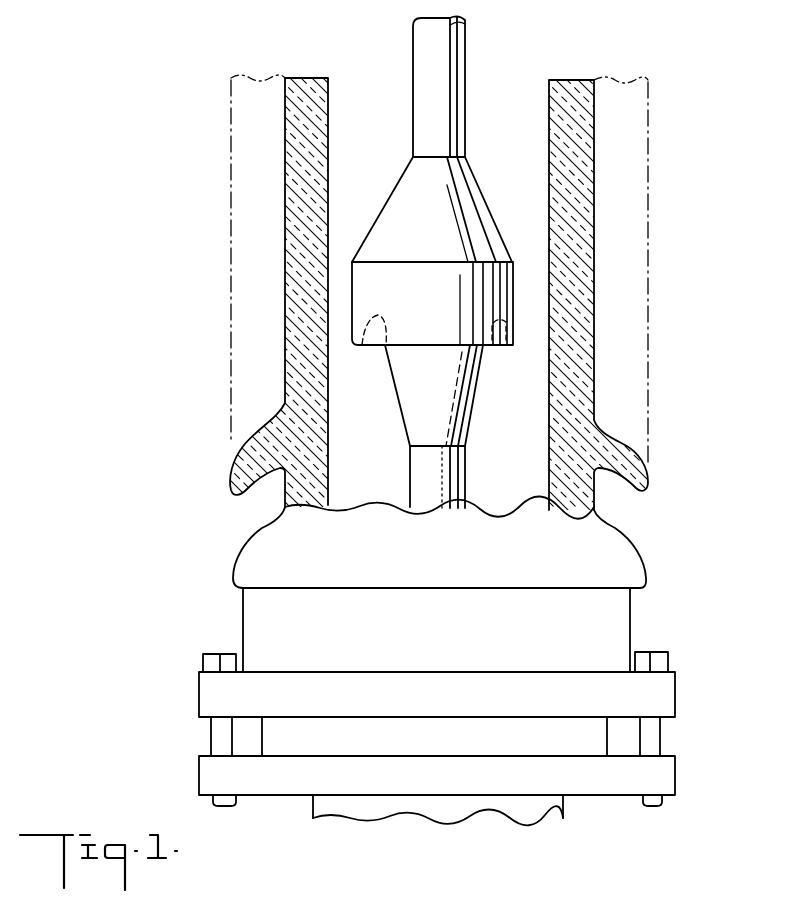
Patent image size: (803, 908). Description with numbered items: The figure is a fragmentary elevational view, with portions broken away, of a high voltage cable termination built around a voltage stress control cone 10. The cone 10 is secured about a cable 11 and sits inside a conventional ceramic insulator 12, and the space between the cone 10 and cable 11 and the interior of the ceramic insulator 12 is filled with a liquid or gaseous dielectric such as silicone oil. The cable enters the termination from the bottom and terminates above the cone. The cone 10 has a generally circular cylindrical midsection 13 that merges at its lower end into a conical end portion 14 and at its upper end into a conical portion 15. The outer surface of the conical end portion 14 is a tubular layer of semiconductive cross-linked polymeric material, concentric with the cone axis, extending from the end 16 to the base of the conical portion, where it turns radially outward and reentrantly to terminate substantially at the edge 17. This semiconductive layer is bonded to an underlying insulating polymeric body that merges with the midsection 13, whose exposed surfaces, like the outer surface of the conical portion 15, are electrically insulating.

The voltage stress control cone 10 is at (433, 262).
The cable 11 is at (470, 470).
The ceramic insulator 12 is at (585, 218).
The circular cylindrical midsection 13 is at (505, 316).
The conical end portion 14 is at (392, 370).
The conical portion 15 is at (383, 207).
The end 16 is at (427, 447).
The edge 17 is at (373, 347).